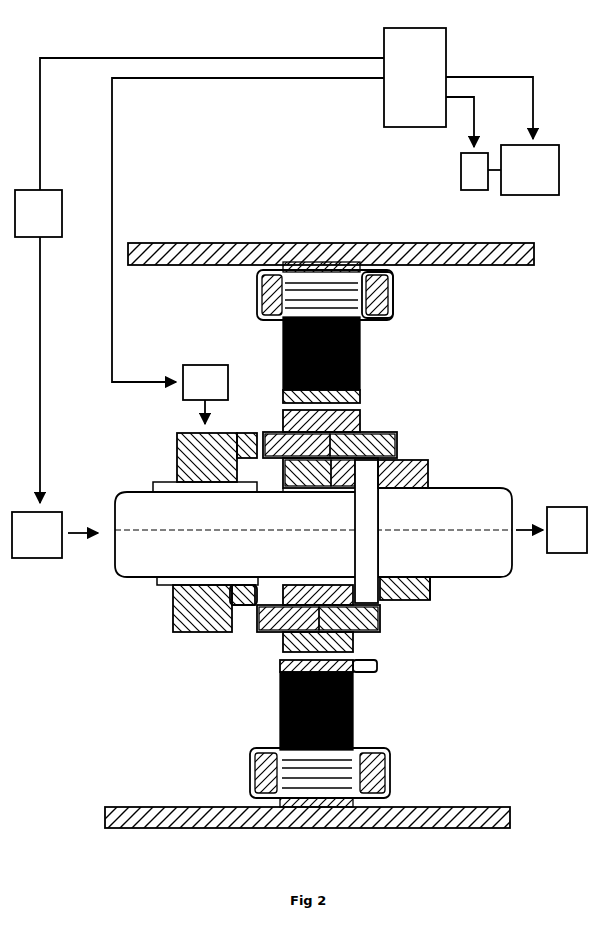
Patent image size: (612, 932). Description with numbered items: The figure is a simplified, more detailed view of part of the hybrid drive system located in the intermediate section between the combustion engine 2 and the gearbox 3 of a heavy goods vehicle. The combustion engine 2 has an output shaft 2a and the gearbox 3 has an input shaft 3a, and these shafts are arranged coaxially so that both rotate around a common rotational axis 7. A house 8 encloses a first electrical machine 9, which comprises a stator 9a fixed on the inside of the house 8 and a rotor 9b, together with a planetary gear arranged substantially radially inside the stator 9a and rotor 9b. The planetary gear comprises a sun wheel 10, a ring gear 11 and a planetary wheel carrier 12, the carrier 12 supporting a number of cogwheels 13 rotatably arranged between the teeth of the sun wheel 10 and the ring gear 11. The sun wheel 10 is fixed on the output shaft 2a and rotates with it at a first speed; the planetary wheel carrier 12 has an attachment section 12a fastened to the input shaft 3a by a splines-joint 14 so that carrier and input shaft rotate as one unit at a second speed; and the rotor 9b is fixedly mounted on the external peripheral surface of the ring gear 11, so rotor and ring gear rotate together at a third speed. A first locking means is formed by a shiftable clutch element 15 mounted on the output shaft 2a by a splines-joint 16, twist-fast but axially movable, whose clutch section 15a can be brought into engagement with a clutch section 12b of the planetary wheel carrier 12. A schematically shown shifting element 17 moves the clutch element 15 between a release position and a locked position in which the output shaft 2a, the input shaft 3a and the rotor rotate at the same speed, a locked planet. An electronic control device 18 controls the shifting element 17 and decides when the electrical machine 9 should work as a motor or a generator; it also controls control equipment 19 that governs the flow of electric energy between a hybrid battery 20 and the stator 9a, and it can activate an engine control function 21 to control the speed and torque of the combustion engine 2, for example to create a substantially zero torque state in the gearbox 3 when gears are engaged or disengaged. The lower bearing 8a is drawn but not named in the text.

The combustion engine 2 is at (38, 540).
The output shaft 2a is at (143, 553).
The gearbox 3 is at (565, 537).
The input shaft 3a is at (468, 555).
The common rotational axis 7 is at (472, 527).
The house 8 is at (188, 805).
The lower bearing 8a is at (320, 777).
The first electrical machine 9 is at (238, 298).
The stator 9a is at (377, 302).
The rotor 9b is at (282, 346).
The sun wheel 10 is at (307, 480).
The ring gear 11 is at (283, 400).
The planetary wheel carrier 12 is at (372, 620).
The attachment section 12a is at (412, 598).
The clutch section 12b is at (260, 633).
The cogwheels 13 is at (285, 415).
The splines-joint 14 is at (418, 590).
The clutch element 15 is at (197, 470).
The clutch section 15a is at (232, 628).
The splines-joint 16 is at (160, 483).
The shifting element 17 is at (207, 373).
The electronic control device 18 is at (415, 77).
The control equipment 19 is at (469, 172).
The hybrid battery 20 is at (534, 168).
The engine control function 21 is at (40, 212).